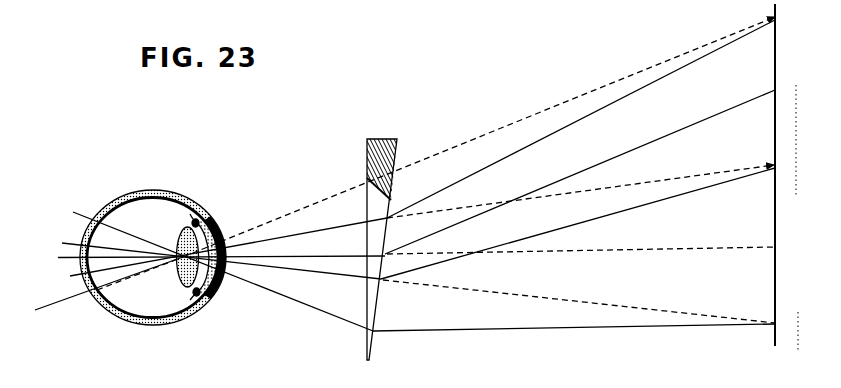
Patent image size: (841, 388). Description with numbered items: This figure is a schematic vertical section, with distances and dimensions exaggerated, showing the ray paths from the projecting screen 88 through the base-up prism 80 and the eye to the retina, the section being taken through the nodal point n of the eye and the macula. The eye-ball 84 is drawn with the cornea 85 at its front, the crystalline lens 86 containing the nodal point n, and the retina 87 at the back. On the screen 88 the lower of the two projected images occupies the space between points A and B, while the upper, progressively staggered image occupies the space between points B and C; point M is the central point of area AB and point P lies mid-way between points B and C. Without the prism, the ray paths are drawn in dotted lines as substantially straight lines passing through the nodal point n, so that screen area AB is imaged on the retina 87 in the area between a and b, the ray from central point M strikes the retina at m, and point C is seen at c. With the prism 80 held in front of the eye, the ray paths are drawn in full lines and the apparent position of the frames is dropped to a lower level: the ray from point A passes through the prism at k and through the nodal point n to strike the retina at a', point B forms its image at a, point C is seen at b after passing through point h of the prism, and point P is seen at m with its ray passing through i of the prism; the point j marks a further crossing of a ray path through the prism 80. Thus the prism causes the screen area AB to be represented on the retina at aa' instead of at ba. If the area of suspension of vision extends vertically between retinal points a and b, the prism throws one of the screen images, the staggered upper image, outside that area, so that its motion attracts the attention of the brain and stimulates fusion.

The prism 80 is at (382, 144).
The eye-ball 84 is at (134, 212).
The cornea 85 is at (266, 209).
The crystalline lens 86 is at (185, 282).
The retina 87 is at (103, 297).
The projecting screen 88 is at (771, 111).
The nodal point n is at (215, 221).
The retinal image point a' is at (211, 263).
The retinal image point a is at (214, 254).
The retinal image point m is at (207, 259).
The retinal image point b is at (220, 255).
The retinal image point c is at (131, 287).
The prism point h is at (389, 218).
The prism point i is at (387, 252).
The prism point j is at (383, 282).
The prism point k is at (375, 333).
The screen point C is at (783, 14).
The screen point P is at (782, 90).
The screen point B is at (783, 168).
The screen point M is at (784, 250).
The screen point A is at (782, 328).